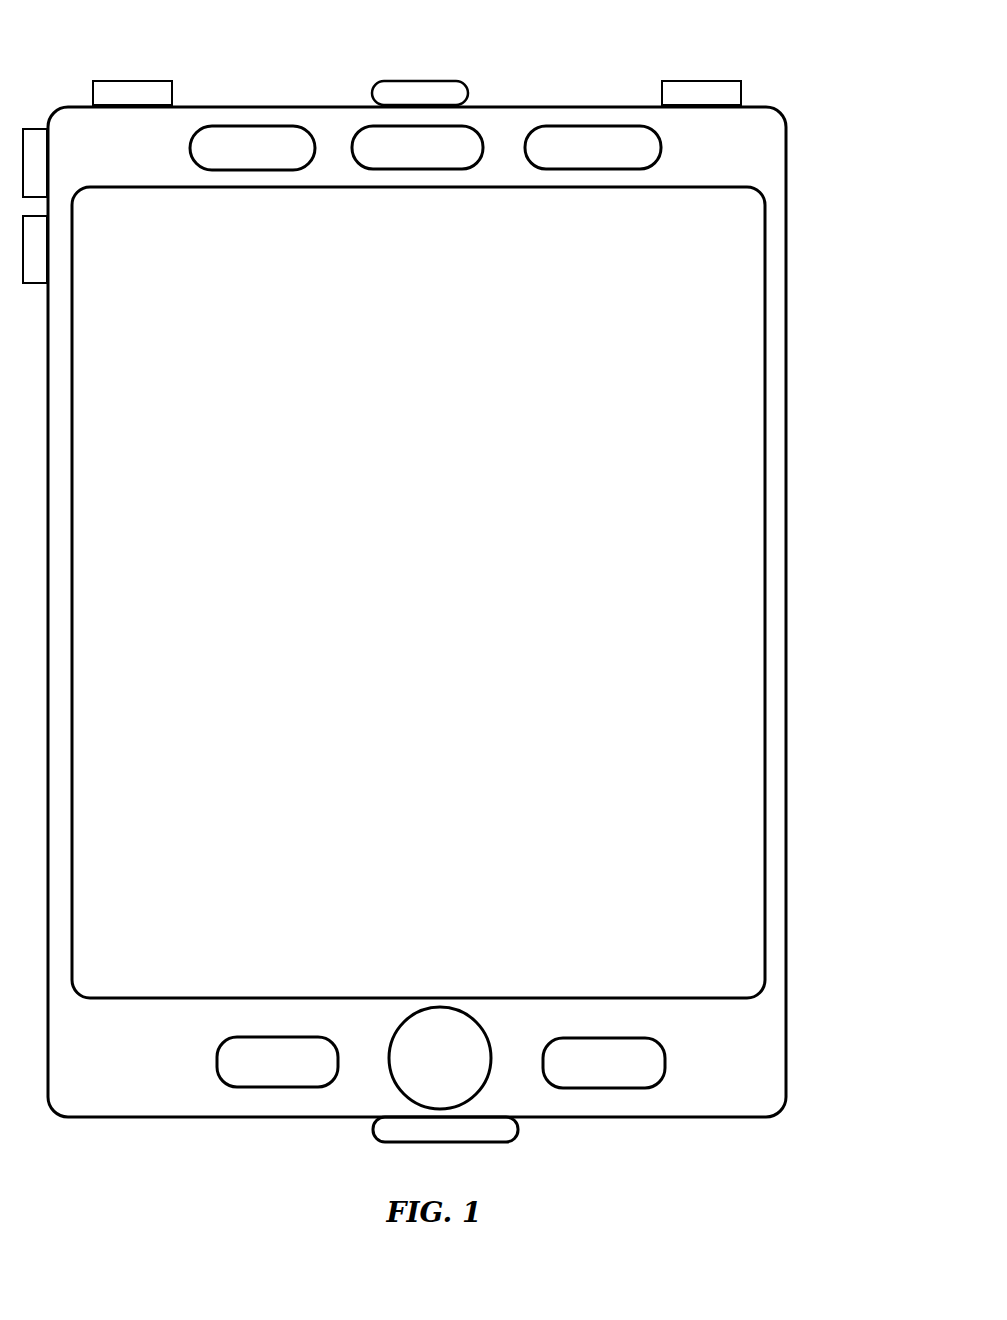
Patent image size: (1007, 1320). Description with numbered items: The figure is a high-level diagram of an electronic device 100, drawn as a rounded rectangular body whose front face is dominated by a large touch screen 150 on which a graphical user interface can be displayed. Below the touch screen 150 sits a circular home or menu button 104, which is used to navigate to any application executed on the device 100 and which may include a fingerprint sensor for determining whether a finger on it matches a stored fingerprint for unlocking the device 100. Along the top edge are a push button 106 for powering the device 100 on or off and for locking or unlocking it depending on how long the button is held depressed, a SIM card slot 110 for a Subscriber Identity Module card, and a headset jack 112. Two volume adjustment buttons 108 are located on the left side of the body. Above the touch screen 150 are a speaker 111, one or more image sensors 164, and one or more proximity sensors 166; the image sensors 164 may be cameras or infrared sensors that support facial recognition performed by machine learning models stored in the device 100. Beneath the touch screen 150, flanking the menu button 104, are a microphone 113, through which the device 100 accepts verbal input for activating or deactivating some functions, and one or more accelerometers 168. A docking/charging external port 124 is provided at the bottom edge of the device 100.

The electronic device 100 is at (823, 107).
The menu button 104 is at (440, 1058).
The push button 106 is at (132, 93).
The volume adjustment buttons 108 is at (41, 206).
The SIM card slot 110 is at (420, 93).
The speaker 111 is at (252, 148).
The headset jack 112 is at (701, 93).
The microphone 113 is at (277, 1062).
The docking/charging external port 124 is at (445, 1129).
The touch screen 150 is at (766, 484).
The image sensors 164 is at (417, 147).
The proximity sensors 166 is at (593, 147).
The accelerometers 168 is at (604, 1063).